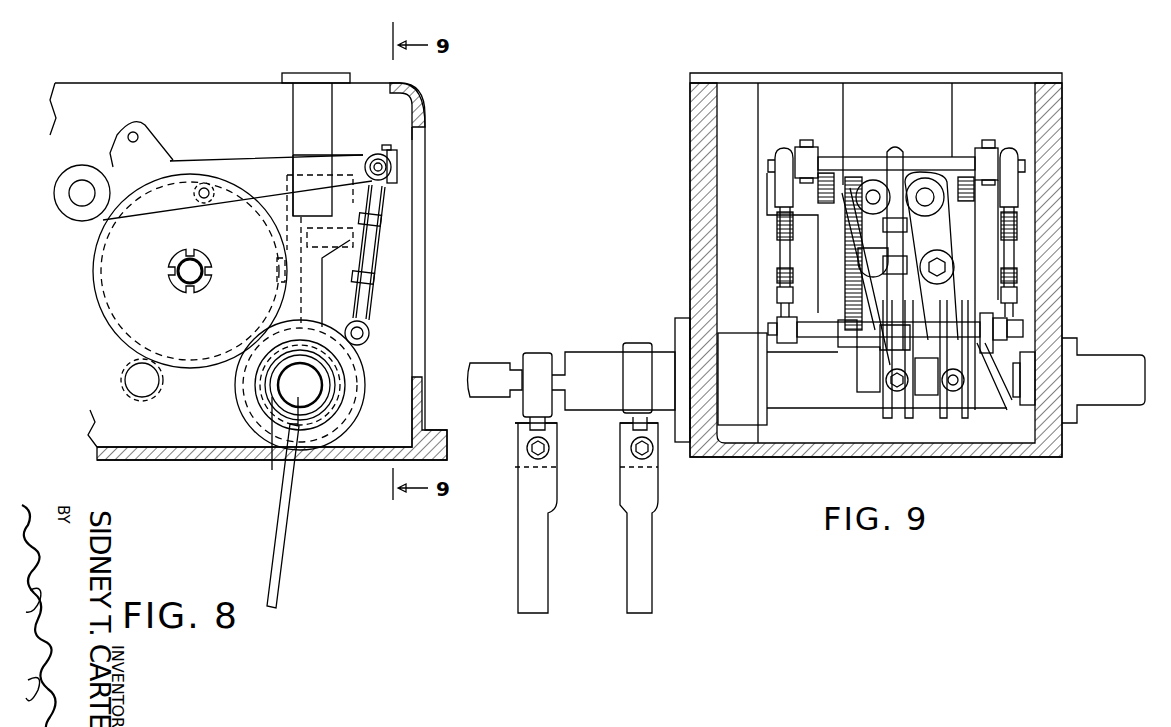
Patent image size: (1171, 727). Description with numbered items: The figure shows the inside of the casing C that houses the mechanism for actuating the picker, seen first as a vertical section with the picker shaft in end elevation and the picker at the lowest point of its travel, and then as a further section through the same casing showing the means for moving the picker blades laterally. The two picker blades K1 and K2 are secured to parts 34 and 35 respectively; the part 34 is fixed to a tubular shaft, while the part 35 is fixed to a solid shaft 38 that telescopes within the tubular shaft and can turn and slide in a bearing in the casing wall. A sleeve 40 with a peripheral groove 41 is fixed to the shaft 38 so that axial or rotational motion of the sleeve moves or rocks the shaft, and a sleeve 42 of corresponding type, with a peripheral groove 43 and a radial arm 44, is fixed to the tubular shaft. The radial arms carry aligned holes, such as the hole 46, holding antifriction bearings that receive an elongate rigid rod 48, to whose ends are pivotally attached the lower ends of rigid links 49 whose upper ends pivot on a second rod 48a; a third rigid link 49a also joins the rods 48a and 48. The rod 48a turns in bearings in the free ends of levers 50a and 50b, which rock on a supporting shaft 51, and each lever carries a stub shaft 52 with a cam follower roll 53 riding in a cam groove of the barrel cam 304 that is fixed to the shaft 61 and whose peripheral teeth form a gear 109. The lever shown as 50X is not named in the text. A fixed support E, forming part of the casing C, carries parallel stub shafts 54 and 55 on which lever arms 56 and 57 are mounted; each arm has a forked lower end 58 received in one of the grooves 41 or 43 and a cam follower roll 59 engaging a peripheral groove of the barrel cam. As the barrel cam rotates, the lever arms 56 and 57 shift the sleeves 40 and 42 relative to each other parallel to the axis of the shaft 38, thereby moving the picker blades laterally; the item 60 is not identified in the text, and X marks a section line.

In FIG. 9, the part 34 is at (625, 423).
In FIG. 9, the part 35 is at (520, 423).
In FIG. 8, the solid shaft 38 is at (293, 393).
In FIG. 9, the solid shaft 38 is at (485, 372).
In FIG. 9, the sleeve 40 is at (1007, 397).
In FIG. 9, the peripheral groove 41 is at (953, 418).
In FIG. 9, the sleeve 42 is at (830, 400).
In FIG. 9, the peripheral groove 43 is at (900, 415).
In FIG. 9, the radial arm 44 is at (848, 347).
In FIG. 9, the hole 46 is at (990, 355).
In FIG. 9, the rigid rod 48 is at (807, 330).
In FIG. 8, the rigid rod 48a is at (393, 167).
In FIG. 9, the rigid rod 48a is at (945, 158).
In FIG. 8, the rigid links 49 is at (363, 305).
In FIG. 9, the rigid links 49 is at (1012, 250).
In FIG. 9, the third rigid link 49a is at (785, 258).
In FIG. 8, the lever 50a is at (183, 163).
In FIG. 9, the lever 50a is at (798, 147).
In FIG. 8, the lever 50b is at (265, 167).
In FIG. 9, the lever 50b is at (1000, 150).
In FIG. 8, the lever 50X is at (118, 135).
In FIG. 8, the supporting shaft 51 is at (83, 193).
In FIG. 8, the stub shaft 52 is at (203, 185).
In FIG. 8, the cam follower roll 53 is at (265, 168).
In FIG. 9, the stub shaft 54 is at (873, 193).
In FIG. 9, the stub shaft 55 is at (924, 192).
In FIG. 8, the lever arm 56 is at (350, 240).
In FIG. 9, the lever arm 56 is at (878, 355).
In FIG. 8, the lever arm 57 is at (302, 310).
In FIG. 9, the lever arm 57 is at (1005, 395).
In FIG. 8, the forked lower end 58 is at (348, 385).
In FIG. 8, the cam follower roll 59 is at (277, 278).
In FIG. 8, the stud 60 is at (188, 367).
In FIG. 8, the shaft 61 is at (191, 274).
In FIG. 9, the shaft 61 is at (768, 250).
In FIG. 9, the gear 109 is at (858, 295).
In FIG. 8, the barrel cam 304 is at (88, 282).
In FIG. 9, the barrel cam 304 is at (823, 232).
In FIG. 8, the casing C is at (426, 117).
In FIG. 9, the casing C is at (1065, 136).
In FIG. 8, the fixed support E is at (330, 127).
In FIG. 9, the fixed support E is at (953, 100).
In FIG. 9, the section line X is at (828, 180).
In FIG. 9, the picker blade K1 is at (635, 590).
In FIG. 9, the picker blade K2 is at (520, 592).